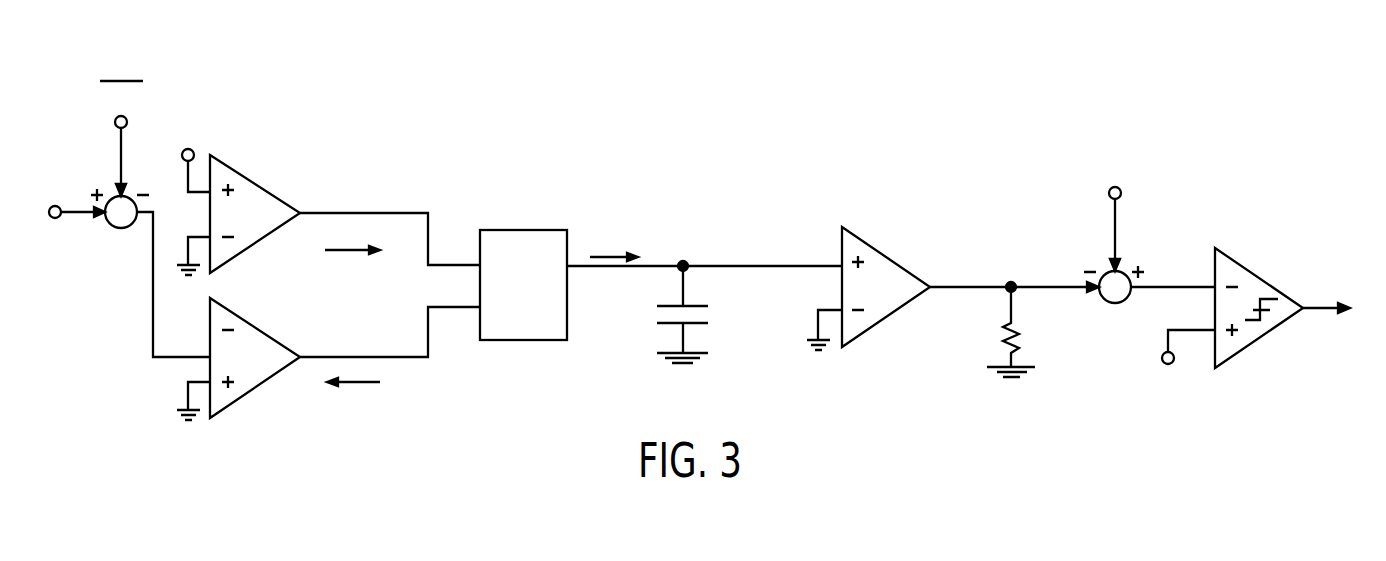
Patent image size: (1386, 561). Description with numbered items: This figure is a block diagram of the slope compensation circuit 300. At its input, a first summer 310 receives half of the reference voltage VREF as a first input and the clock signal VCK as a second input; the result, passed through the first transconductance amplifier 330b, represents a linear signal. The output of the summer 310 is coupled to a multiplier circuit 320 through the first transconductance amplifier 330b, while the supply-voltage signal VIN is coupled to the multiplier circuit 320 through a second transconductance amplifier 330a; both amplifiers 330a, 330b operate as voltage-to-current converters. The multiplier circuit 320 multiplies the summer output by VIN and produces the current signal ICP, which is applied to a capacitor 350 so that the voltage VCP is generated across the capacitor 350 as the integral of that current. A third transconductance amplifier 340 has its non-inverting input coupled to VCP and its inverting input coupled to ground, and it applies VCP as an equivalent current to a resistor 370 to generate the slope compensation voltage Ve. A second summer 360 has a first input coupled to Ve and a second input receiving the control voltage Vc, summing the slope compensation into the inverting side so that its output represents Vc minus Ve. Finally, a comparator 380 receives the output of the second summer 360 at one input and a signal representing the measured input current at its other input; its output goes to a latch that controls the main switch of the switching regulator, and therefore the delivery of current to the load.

The slope compensation circuit 300 is at (768, 138).
The first summer 310 is at (119, 229).
The multiplier circuit 320 is at (520, 229).
The second transconductance amplifier 330a is at (255, 180).
The first transconductance amplifier 330b is at (255, 323).
The third transconductance amplifier 340 is at (885, 252).
The capacitor 350 is at (717, 332).
The second summer 360 is at (1147, 260).
The resistor 370 is at (1015, 345).
The comparator 380 is at (1258, 272).